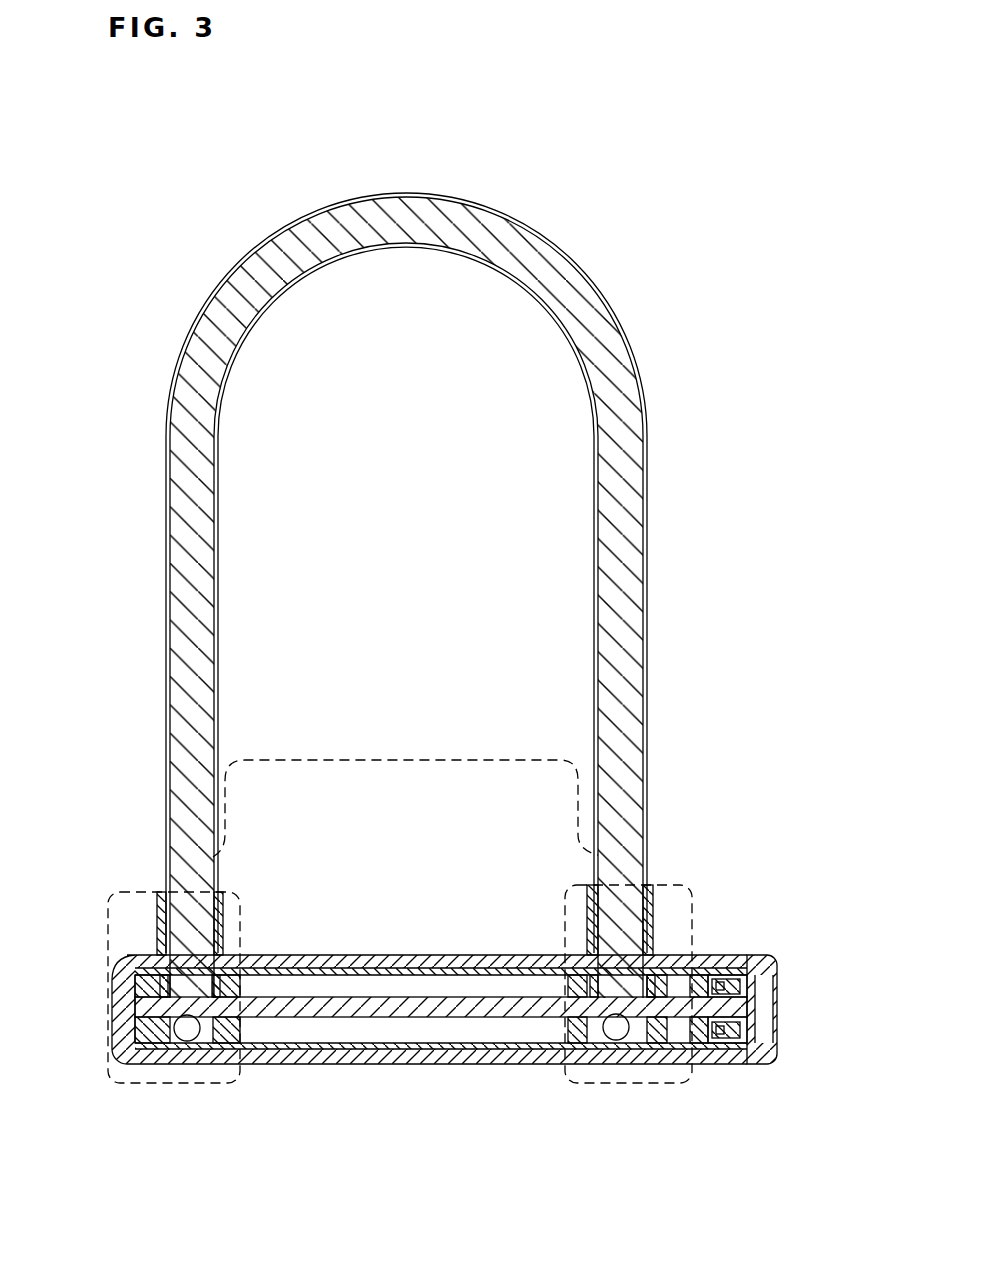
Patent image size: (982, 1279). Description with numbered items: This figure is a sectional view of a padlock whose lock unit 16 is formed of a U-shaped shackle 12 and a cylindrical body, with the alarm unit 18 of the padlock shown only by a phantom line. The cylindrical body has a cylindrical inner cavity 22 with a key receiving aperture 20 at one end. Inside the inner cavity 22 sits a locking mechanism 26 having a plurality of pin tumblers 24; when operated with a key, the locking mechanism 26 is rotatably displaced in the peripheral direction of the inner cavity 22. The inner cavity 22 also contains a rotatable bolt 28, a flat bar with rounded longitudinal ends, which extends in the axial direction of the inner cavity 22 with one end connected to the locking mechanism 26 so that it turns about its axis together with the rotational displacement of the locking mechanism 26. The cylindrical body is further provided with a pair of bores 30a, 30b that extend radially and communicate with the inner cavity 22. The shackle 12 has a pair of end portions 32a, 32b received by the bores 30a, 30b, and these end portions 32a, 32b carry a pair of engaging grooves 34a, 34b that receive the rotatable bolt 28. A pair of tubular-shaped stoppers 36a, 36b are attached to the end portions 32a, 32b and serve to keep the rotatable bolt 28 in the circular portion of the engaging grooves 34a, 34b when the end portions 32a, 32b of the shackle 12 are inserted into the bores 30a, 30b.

The U-shaped shackle 12 is at (631, 345).
The lock unit 16 is at (626, 280).
The alarm unit 18 is at (372, 760).
The key receiving aperture 20 is at (770, 1025).
The cylindrical inner cavity 22 is at (478, 1044).
The pin tumblers 24 is at (737, 1058).
The locking mechanism 26 is at (757, 1008).
The rotatable bolt 28 is at (400, 1005).
The bore 30a is at (203, 1040).
The bore 30b is at (647, 1012).
The end portion 32a is at (182, 975).
The end portion 32b is at (638, 963).
The engaging groove 34a is at (181, 1040).
The engaging groove 34b is at (604, 1030).
The tubular-shaped stopper 36a is at (156, 920).
The tubular-shaped stopper 36b is at (642, 937).